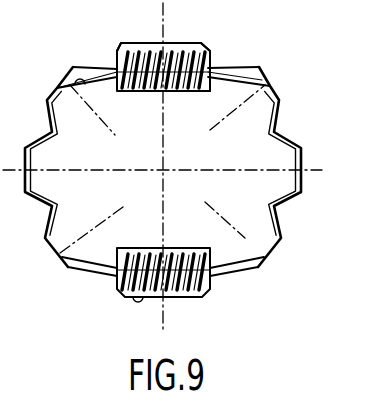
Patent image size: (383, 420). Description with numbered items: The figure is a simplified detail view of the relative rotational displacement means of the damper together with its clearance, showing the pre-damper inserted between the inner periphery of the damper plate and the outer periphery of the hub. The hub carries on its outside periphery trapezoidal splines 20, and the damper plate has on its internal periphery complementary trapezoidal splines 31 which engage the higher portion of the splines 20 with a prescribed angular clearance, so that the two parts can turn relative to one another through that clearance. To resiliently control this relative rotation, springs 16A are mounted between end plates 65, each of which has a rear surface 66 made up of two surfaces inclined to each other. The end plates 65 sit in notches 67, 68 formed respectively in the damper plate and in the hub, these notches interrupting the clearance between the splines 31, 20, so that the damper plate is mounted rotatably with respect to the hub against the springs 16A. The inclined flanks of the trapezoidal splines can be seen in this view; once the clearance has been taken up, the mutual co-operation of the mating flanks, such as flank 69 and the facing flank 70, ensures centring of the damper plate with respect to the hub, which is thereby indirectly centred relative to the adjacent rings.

The springs 16A is at (155, 43).
The splines 20 is at (83, 248).
The splines 31 is at (52, 130).
The end plates 65 is at (115, 58).
The rear surface 66 is at (207, 90).
The notch 67 is at (157, 248).
The notch 68 is at (142, 298).
The mating flank 69 is at (92, 72).
The pivot 70 is at (78, 88).